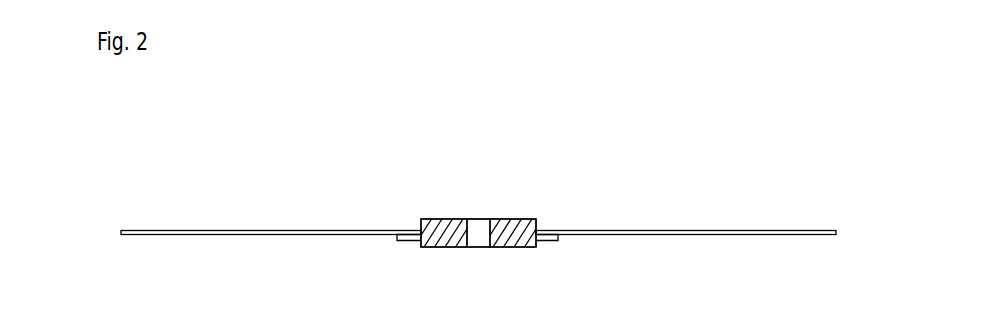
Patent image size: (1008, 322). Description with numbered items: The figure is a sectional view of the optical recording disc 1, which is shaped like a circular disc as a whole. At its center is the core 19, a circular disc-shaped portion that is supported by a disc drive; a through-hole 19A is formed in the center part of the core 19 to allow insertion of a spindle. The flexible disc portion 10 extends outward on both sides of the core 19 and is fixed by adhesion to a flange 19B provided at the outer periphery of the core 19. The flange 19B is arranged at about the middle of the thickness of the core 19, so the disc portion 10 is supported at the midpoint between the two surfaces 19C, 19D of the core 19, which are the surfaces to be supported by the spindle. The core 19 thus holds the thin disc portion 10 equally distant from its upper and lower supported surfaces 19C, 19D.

The optical recording disc 1 is at (609, 185).
The disc portion 10 is at (282, 230).
The core 19 is at (527, 219).
The through-hole 19A is at (477, 219).
The flange 19B is at (547, 241).
The surface 19C is at (437, 218).
The surface 19D is at (437, 248).